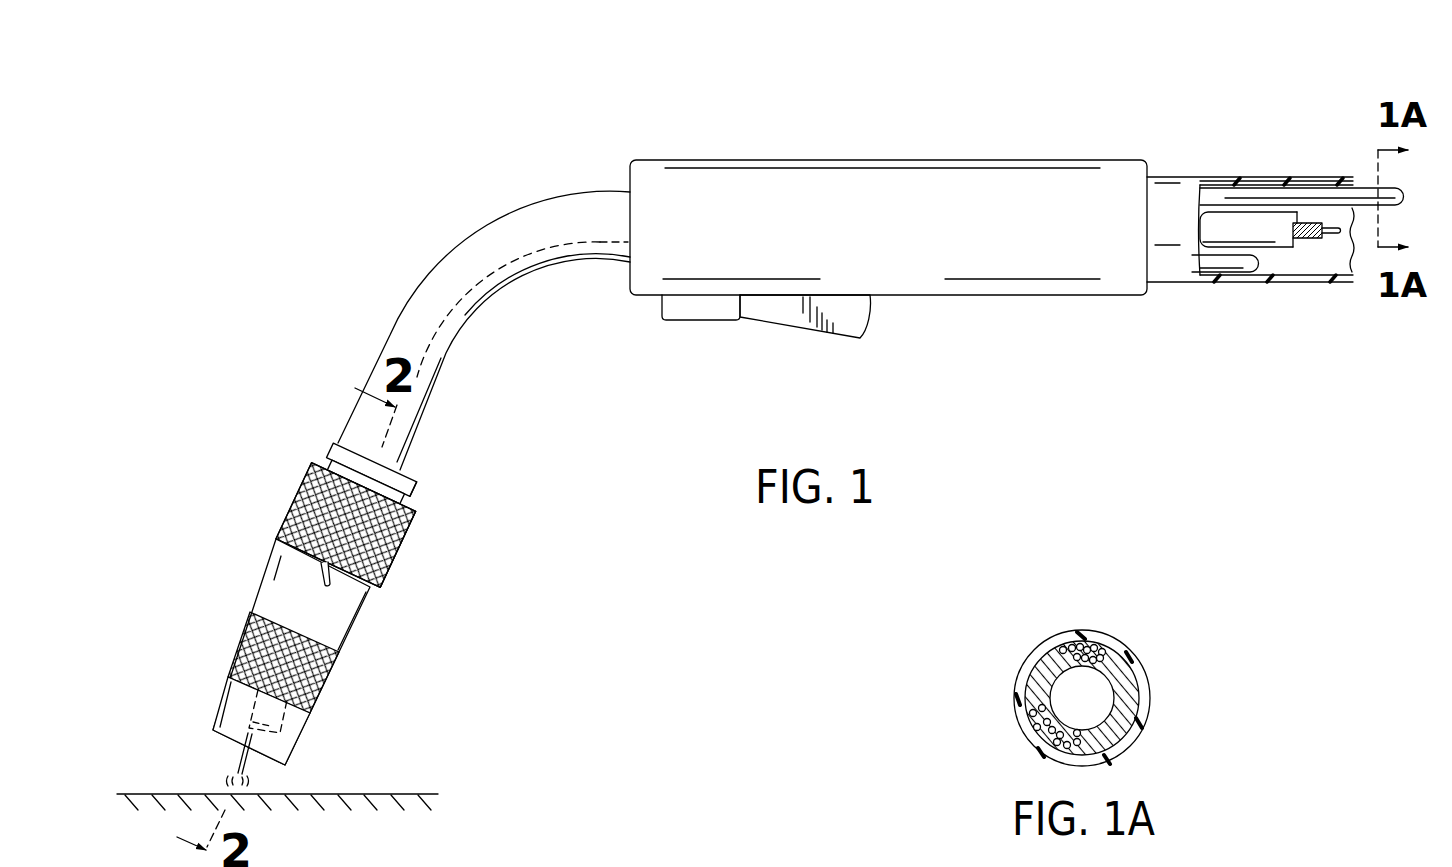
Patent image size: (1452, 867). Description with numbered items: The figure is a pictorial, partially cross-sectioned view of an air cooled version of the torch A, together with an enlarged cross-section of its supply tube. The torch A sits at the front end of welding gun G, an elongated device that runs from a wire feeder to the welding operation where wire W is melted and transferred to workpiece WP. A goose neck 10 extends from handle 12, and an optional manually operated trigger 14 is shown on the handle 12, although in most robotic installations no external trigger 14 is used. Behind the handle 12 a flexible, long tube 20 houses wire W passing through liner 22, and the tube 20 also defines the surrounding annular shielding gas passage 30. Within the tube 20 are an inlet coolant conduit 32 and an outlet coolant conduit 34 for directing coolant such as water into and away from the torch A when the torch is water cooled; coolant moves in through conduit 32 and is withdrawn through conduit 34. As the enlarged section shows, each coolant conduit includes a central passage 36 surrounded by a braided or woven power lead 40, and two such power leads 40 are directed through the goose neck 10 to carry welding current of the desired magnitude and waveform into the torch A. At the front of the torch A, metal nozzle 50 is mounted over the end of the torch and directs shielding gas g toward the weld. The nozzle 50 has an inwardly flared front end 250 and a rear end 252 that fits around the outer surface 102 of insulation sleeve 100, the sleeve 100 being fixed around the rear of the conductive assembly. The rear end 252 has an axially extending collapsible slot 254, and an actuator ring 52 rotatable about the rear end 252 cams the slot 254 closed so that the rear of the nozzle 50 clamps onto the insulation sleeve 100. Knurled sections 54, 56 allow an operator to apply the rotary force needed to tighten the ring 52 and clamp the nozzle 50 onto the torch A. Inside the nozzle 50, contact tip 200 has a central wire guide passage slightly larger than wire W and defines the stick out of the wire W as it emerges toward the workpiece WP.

In FIG. 1, the goose neck 10 is at (470, 240).
In FIG. 1, the handle 12 is at (857, 177).
In FIG. 1, the trigger 14 is at (833, 323).
In FIG. 1, the flexible tube 20 is at (1226, 176).
In FIG. 1, the liner 22 is at (1313, 223).
In FIG. 1, the shielding gas passage 30 is at (1310, 257).
In FIG. 1, the inlet coolant conduit 32 is at (1273, 190).
In FIG. 1A, the inlet coolant conduit 32 is at (1107, 630).
In FIG. 1, the outlet coolant conduit 34 is at (1230, 263).
In FIG. 1A, the central passage 36 is at (1100, 693).
In FIG. 1A, the power lead 40 is at (1027, 712).
In FIG. 1, the nozzle 50 is at (258, 598).
In FIG. 1, the actuator ring 52 is at (293, 492).
In FIG. 1, the knurled section 54 is at (240, 653).
In FIG. 1, the knurled section 56 is at (383, 538).
In FIG. 1, the insulation sleeve 100 is at (414, 479).
In FIG. 1, the outer surface 102 is at (334, 445).
In FIG. 1, the contact tip 200 is at (283, 730).
In FIG. 1, the front end 250 is at (221, 712).
In FIG. 1, the rear end 252 is at (404, 443).
In FIG. 1, the collapsible slot 254 is at (364, 598).
In FIG. 1, the torch A is at (213, 513).
In FIG. 1, the welding gun G is at (1208, 177).
In FIG. 1, the wire W is at (217, 775).
In FIG. 1, the workpiece WP is at (398, 794).
In FIG. 1, the shielding gas g is at (258, 780).